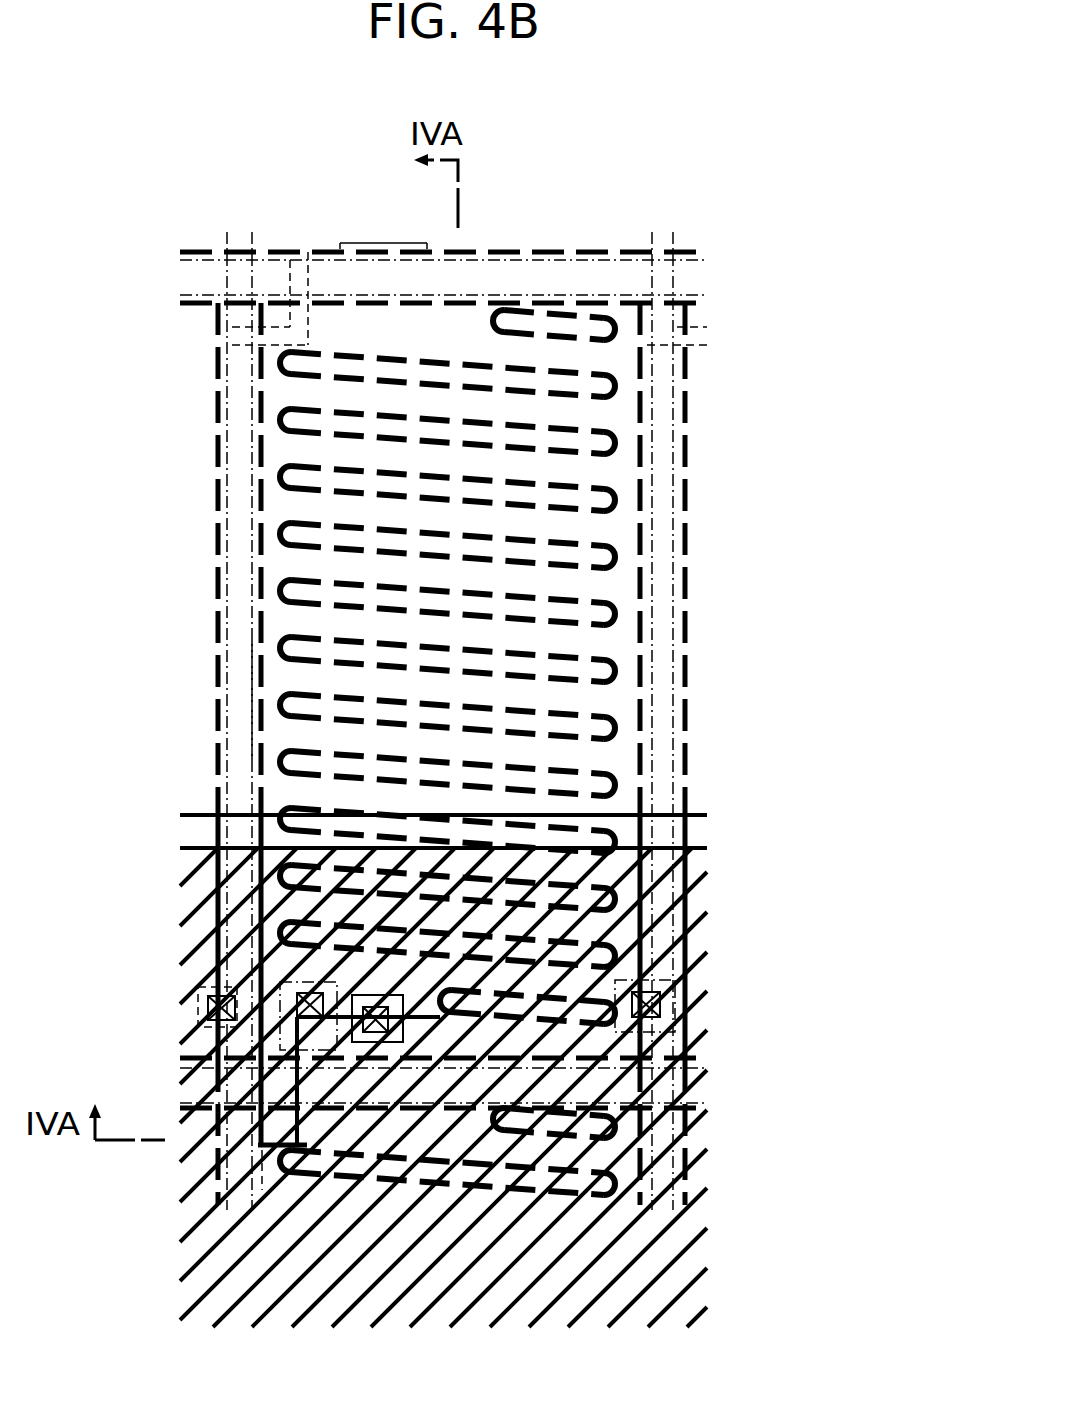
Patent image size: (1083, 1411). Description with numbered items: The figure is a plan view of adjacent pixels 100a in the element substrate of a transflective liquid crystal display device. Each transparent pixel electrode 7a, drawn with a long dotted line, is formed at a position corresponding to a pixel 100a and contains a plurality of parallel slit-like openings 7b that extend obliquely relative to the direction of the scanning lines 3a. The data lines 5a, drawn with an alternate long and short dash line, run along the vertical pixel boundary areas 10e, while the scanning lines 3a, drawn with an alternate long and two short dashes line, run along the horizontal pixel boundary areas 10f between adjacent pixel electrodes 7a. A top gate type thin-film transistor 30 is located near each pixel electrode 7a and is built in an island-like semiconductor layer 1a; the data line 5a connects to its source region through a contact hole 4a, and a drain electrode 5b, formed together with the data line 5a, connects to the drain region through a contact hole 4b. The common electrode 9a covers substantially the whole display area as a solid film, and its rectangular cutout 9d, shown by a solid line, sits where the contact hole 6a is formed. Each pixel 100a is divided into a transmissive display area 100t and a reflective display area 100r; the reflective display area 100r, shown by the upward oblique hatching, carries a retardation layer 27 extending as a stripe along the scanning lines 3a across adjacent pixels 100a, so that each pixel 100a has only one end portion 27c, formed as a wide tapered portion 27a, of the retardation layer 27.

The semiconductor layer 1a is at (265, 1177).
The scanning line 3a is at (176, 252).
The contact hole 4a is at (225, 1007).
The contact hole 4b is at (306, 998).
The data line 5a is at (450, 702).
The drain electrode 5b is at (385, 1045).
The contact hole 6a is at (378, 1040).
The pixel electrode 7a is at (262, 700).
The slit-like opening 7b is at (282, 647).
The common electrode 9a is at (357, 752).
The rectangular cutout 9d is at (392, 1022).
The vertical pixel boundary area 10e is at (268, 238).
The horizontal pixel boundary area 10f is at (391, 680).
The retardation layer 27 is at (509, 1067).
The tapered portion 27a is at (712, 808).
The end portion 27c is at (509, 828).
The thin-film transistor 30 is at (325, 1083).
The pixel 100a is at (837, 1063).
The transmissive display area 100t is at (715, 807).
The reflective display area 100r is at (712, 1063).